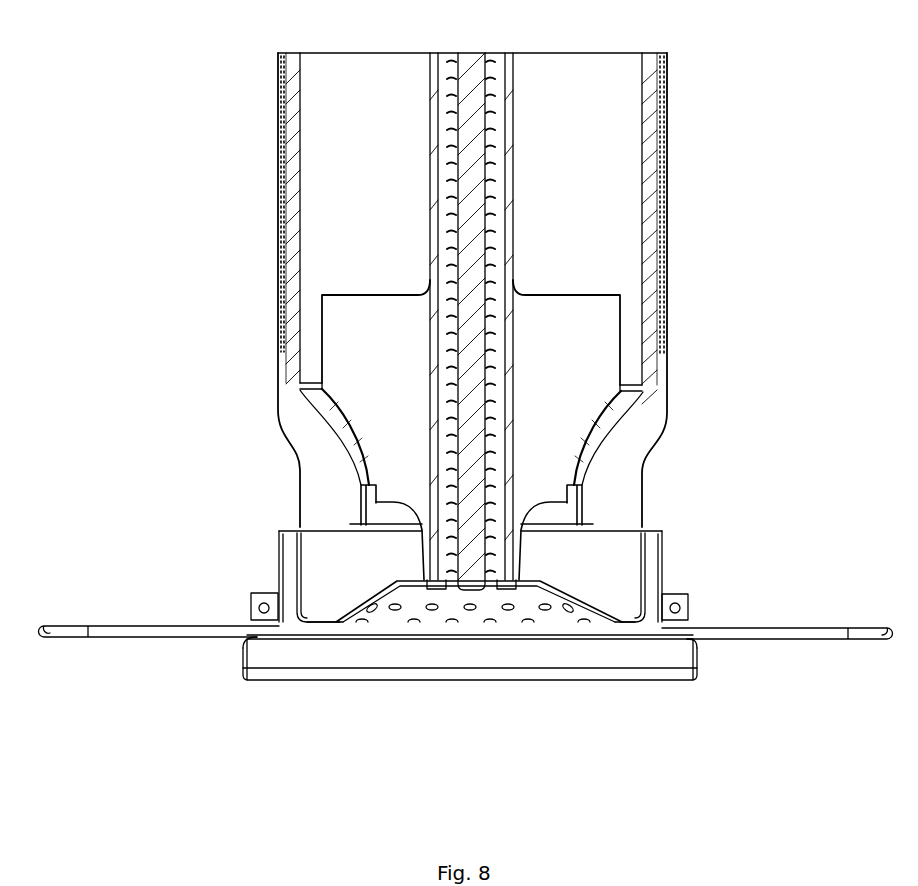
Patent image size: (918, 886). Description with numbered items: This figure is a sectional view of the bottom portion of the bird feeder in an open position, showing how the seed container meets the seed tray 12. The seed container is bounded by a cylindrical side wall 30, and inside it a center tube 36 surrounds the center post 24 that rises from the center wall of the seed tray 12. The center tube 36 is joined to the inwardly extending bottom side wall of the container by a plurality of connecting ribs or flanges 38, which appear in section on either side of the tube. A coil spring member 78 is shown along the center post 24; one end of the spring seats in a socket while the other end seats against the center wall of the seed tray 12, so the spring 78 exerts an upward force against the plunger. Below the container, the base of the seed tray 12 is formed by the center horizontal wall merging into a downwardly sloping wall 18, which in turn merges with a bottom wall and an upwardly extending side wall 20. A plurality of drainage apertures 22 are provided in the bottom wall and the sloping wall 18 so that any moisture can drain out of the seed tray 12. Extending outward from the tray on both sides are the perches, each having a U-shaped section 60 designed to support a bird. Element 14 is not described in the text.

The seed tray 12 is at (613, 556).
The outlet lip 14 is at (545, 572).
The downwardly sloping wall 18 is at (583, 602).
The upwardly extending side wall 20 is at (640, 605).
The drainage apertures 22 is at (398, 610).
The center post 24 is at (472, 220).
The cylindrical side wall 30 is at (641, 165).
The center tube 36 is at (512, 211).
The connecting ribs or flanges 38 is at (380, 356).
The U-shaped section 60 is at (812, 628).
The coil spring member 78 is at (486, 127).